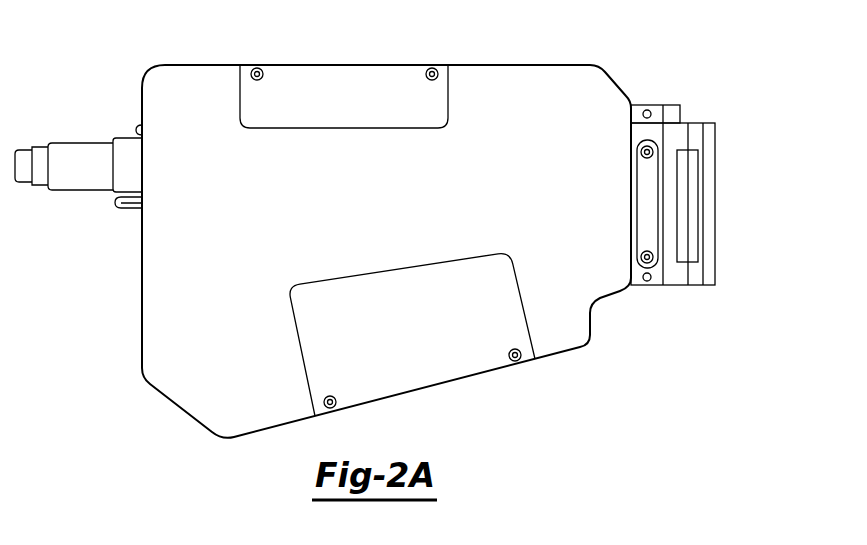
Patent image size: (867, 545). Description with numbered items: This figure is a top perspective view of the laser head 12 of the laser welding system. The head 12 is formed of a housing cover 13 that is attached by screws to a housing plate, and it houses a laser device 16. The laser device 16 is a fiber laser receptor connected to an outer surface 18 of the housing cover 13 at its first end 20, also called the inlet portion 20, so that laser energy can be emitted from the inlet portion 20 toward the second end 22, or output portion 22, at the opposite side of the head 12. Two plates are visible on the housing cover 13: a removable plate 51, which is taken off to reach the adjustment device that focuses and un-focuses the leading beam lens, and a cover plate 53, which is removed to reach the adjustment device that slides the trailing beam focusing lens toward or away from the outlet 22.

The laser head 12 is at (722, 80).
The housing cover 13 is at (598, 90).
The laser device 16 is at (77, 153).
The outer surface 18 is at (142, 300).
The first end (inlet portion) 20 is at (142, 230).
The second end (output portion/outlet) 22 is at (715, 145).
The removable plate 51 is at (387, 82).
The cover plate 53 is at (427, 373).